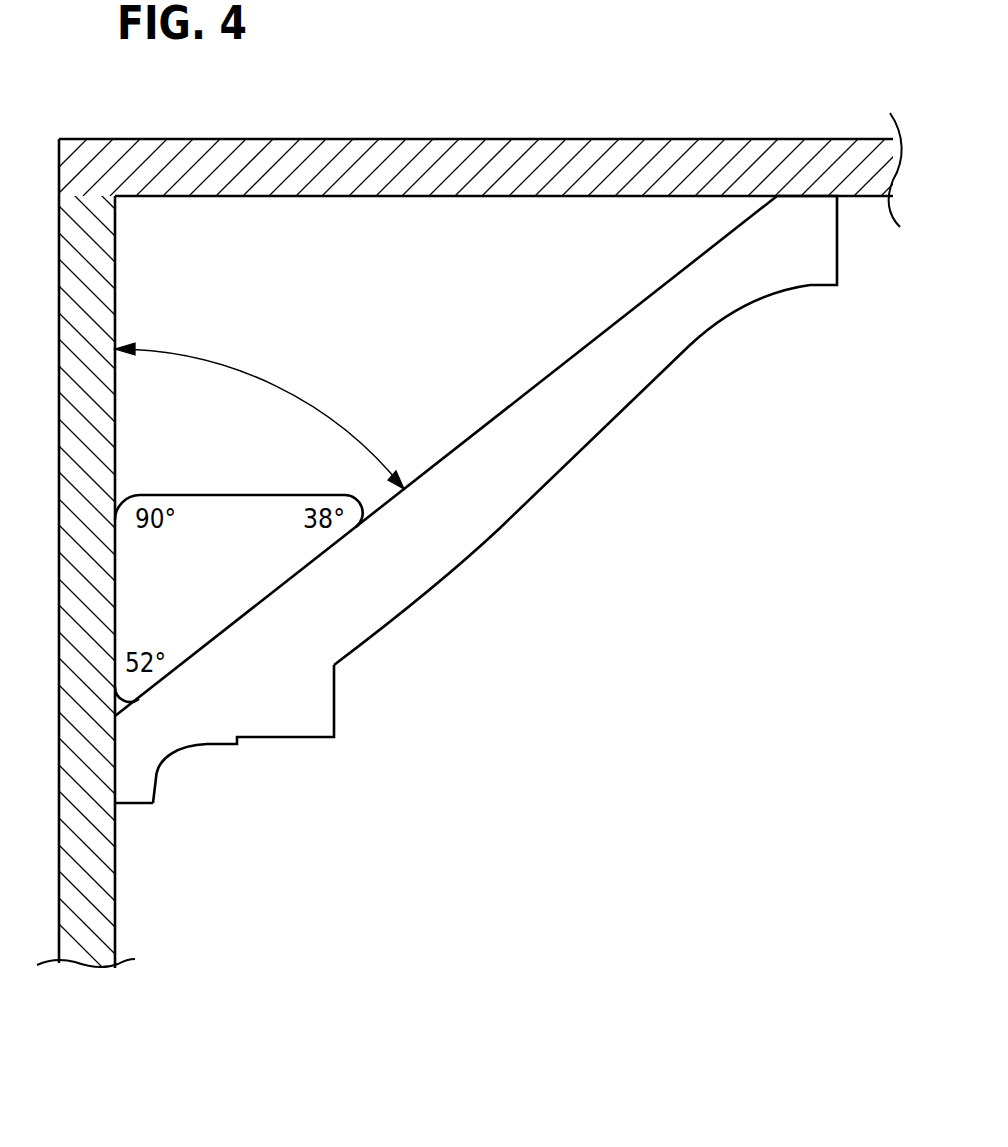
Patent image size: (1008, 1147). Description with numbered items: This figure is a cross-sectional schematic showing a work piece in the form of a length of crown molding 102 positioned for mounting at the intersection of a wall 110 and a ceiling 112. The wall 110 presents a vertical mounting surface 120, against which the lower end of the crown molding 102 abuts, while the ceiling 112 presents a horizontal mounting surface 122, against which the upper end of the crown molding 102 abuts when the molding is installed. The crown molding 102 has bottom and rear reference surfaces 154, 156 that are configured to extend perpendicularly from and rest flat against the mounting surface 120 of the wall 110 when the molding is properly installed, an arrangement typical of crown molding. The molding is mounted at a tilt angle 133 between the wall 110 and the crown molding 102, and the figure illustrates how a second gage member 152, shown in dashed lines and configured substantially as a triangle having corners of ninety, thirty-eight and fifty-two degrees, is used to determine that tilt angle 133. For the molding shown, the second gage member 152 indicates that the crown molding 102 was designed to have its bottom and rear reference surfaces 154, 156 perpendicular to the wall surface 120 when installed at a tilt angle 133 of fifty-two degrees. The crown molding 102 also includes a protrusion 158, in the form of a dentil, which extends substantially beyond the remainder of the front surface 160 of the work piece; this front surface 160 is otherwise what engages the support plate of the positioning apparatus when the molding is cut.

The crown molding 102 is at (466, 519).
The wall 110 is at (144, 566).
The ceiling 112 is at (497, 188).
The vertical mounting surface 120 is at (115, 910).
The horizontal mounting surface 122 is at (245, 197).
The tilt angle 133 is at (263, 378).
The second gage member 152 is at (172, 607).
The bottom reference surface 154 is at (141, 805).
The rear reference surface 156 is at (115, 762).
The protrusion 158 is at (320, 710).
The front surface 160 is at (448, 582).